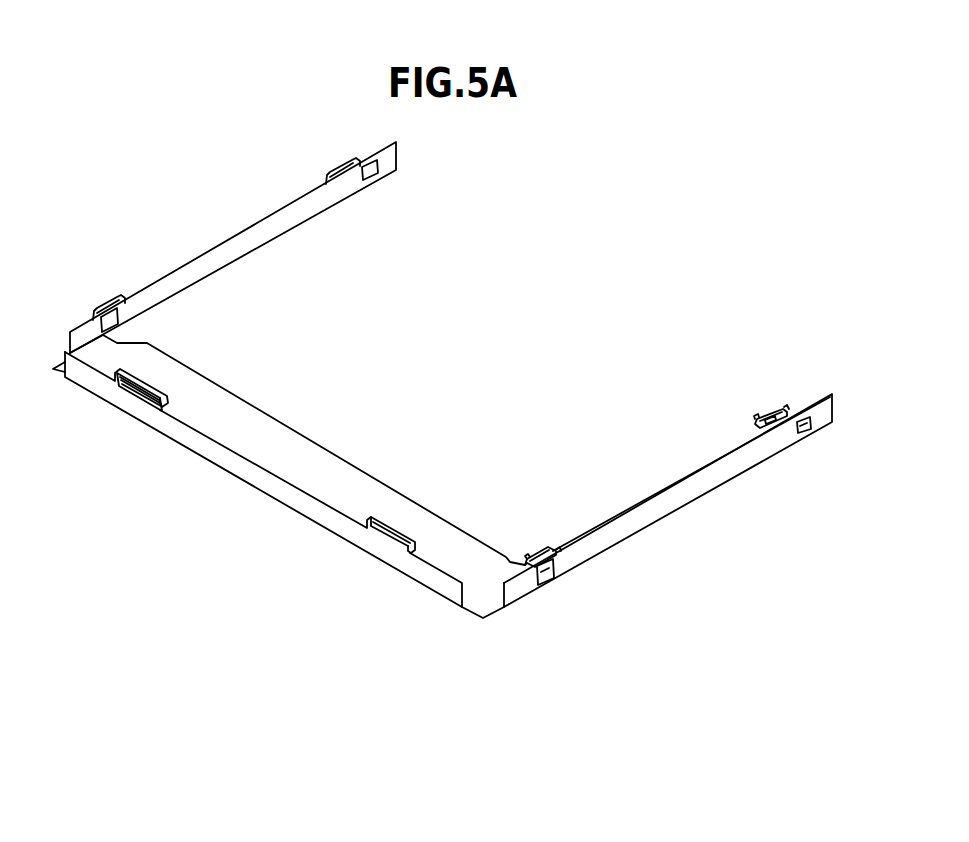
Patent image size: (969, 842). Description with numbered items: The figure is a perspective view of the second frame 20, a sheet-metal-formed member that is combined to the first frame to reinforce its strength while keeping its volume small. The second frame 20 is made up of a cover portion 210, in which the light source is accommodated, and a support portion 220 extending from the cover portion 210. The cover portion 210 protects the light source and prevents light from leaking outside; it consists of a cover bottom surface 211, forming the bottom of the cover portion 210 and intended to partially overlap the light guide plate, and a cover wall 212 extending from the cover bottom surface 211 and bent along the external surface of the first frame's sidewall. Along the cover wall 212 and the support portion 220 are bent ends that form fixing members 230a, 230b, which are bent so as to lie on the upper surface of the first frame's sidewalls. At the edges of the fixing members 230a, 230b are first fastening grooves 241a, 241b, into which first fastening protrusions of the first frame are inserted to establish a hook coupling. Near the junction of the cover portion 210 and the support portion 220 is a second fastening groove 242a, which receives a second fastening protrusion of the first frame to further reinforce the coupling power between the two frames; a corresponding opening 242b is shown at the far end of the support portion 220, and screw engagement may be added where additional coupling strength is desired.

The second frame 20 is at (459, 432).
The cover portion 210 is at (295, 476).
The cover bottom surface 211 is at (350, 512).
The cover wall 212 is at (300, 500).
The support portion 220 is at (590, 547).
The fixing member 230a is at (424, 505).
The fixing member 230b is at (661, 470).
The first fastening groove 241a is at (395, 528).
The first fastening groove 241b is at (784, 391).
The second fastening groove 242a is at (552, 580).
The second tab opening 242b is at (808, 428).